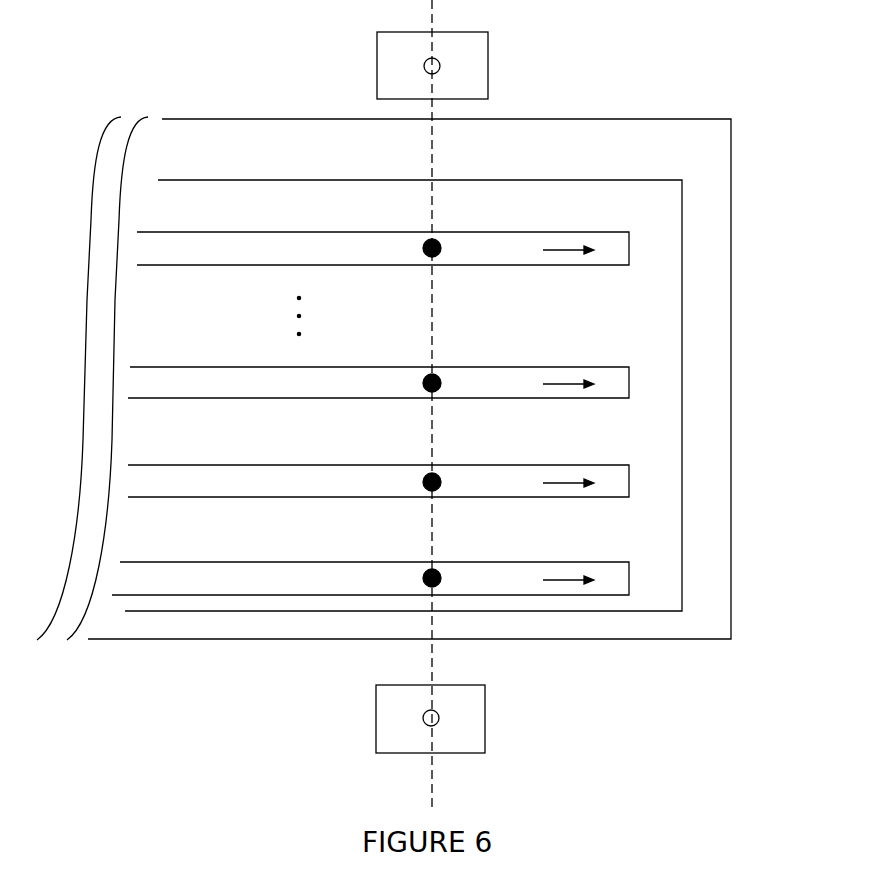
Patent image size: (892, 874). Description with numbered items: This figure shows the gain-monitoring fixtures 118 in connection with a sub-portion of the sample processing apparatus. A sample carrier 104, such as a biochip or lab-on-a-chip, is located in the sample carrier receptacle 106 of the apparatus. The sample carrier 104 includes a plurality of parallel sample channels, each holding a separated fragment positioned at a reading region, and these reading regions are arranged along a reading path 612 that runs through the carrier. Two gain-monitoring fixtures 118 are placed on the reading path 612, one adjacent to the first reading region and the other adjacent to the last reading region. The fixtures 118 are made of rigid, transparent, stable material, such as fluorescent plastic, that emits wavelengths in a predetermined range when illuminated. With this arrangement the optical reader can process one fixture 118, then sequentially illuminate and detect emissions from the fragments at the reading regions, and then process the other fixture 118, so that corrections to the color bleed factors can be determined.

The sample carrier 104 is at (550, 180).
The sample carrier receptacle 106 is at (550, 119).
The gain-monitoring fixture 118 is at (488, 63).
The reading path 612 is at (432, 778).